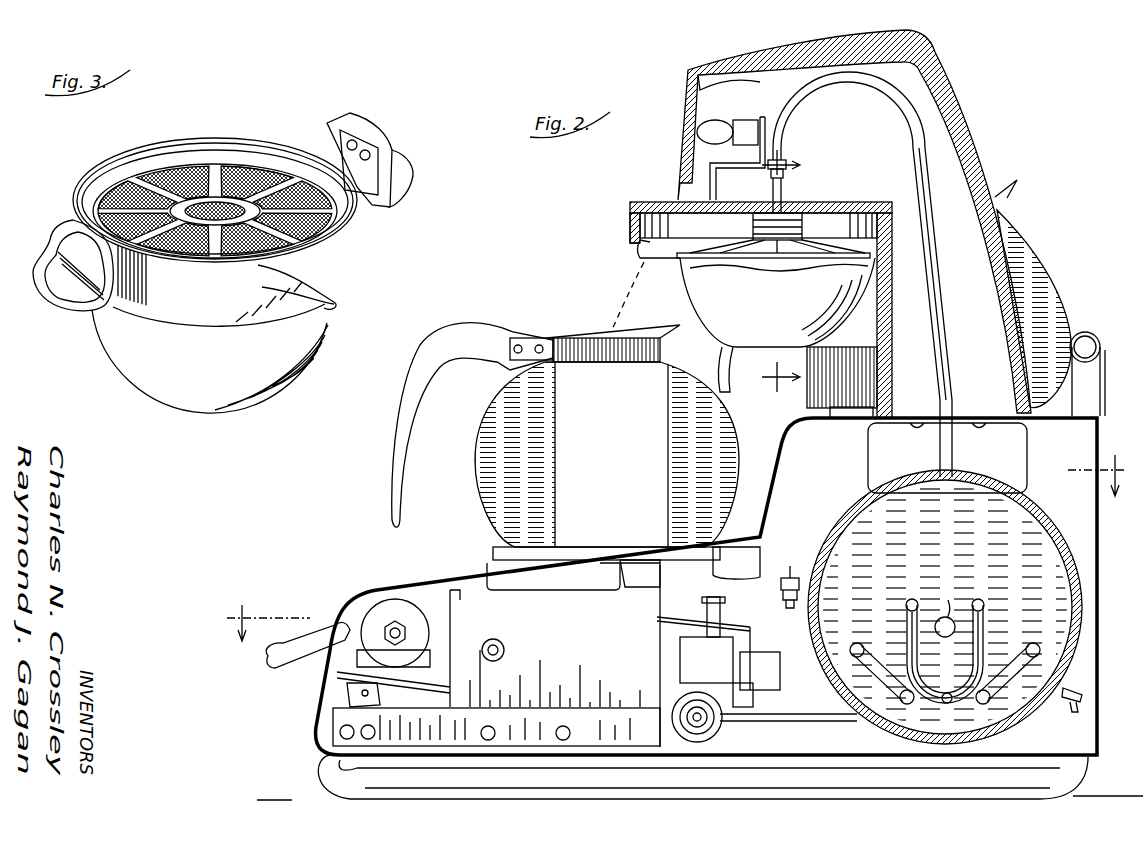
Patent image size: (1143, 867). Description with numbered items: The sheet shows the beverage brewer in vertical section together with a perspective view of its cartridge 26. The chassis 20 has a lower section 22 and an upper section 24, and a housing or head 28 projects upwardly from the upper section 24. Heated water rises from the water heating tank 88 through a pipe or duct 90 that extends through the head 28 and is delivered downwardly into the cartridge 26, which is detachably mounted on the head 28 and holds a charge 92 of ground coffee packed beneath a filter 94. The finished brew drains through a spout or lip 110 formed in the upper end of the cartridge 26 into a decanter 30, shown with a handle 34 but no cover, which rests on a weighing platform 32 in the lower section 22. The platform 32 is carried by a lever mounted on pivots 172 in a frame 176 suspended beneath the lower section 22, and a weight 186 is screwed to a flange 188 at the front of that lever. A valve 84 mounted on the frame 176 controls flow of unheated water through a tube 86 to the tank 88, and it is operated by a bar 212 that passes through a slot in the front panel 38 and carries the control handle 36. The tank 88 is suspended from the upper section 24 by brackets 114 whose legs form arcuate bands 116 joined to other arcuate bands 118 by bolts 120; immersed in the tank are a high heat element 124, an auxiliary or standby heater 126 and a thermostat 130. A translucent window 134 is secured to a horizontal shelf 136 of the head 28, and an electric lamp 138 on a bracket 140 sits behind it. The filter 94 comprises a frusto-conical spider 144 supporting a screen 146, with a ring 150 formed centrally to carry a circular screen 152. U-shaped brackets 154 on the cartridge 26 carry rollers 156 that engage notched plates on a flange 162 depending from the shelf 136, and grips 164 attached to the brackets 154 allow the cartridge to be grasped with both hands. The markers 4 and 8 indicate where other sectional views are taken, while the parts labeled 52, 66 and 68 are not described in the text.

In FIG. 2, the section line 4- 4 is at (677, 538).
In FIG. 2, the section line 8- 8 is at (770, 271).
In FIG. 2, the chassis 20 is at (371, 586).
In FIG. 2, the lower section 22 is at (433, 588).
In FIG. 2, the upper section 24 is at (822, 416).
In FIG. 3, the cartridge 26 is at (165, 380).
In FIG. 2, the cartridge 26 is at (775, 314).
In FIG. 2, the housing or head 28 is at (964, 120).
In FIG. 2, the decanter 30 is at (475, 475).
In FIG. 2, the weighing platform 32 is at (497, 553).
In FIG. 2, the handle 34 is at (390, 465).
In FIG. 2, the control handle 36 is at (287, 657).
In FIG. 2, the front panel 38 is at (330, 713).
In FIG. 2, the housing bulge 52 is at (1039, 263).
In FIG. 2, the handle 66 is at (1088, 332).
In FIG. 2, the base plate 68 is at (330, 770).
In FIG. 2, the valve 84 is at (690, 705).
In FIG. 2, the tube 86 is at (790, 726).
In FIG. 2, the water heating tank 88 is at (846, 512).
In FIG. 2, the pipe or duct 90 is at (787, 178).
In FIG. 2, the charge 92 is at (840, 190).
In FIG. 3, the filter 94 is at (245, 180).
In FIG. 3, the spout or lip 110 is at (318, 303).
In FIG. 2, the spout or lip 110 is at (666, 262).
In FIG. 2, the brackets 114 is at (868, 450).
In FIG. 2, the arcuate bands 116 is at (826, 548).
In FIG. 2, the arcuate bands 118 is at (822, 668).
In FIG. 2, the bolts 120 is at (1070, 722).
In FIG. 2, the high heat element 124 is at (870, 643).
In FIG. 2, the auxiliary or standby heater 126 is at (980, 598).
In FIG. 2, the thermostat 130 is at (947, 604).
In FIG. 2, the front piece or window 134 is at (688, 90).
In FIG. 2, the horizontal shelf 136 is at (650, 202).
In FIG. 2, the electric lamp 138 is at (705, 135).
In FIG. 2, the bracket 140 is at (770, 135).
In FIG. 3, the truss or spider 144 is at (268, 183).
In FIG. 3, the screen or strainer 146 is at (120, 195).
In FIG. 3, the ring 150 is at (206, 200).
In FIG. 3, the circular screen 152 is at (222, 204).
In FIG. 3, the U-shaped brackets 154 is at (372, 160).
In FIG. 3, the rollers 156 is at (358, 148).
In FIG. 2, the flange 162 is at (628, 225).
In FIG. 3, the grips 164 is at (62, 293).
In FIG. 2, the pivots 172 is at (500, 645).
In FIG. 2, the frame 176 is at (590, 642).
In FIG. 2, the weight 186 is at (370, 618).
In FIG. 2, the flange 188 is at (433, 627).
In FIG. 2, the bar 212 is at (343, 680).